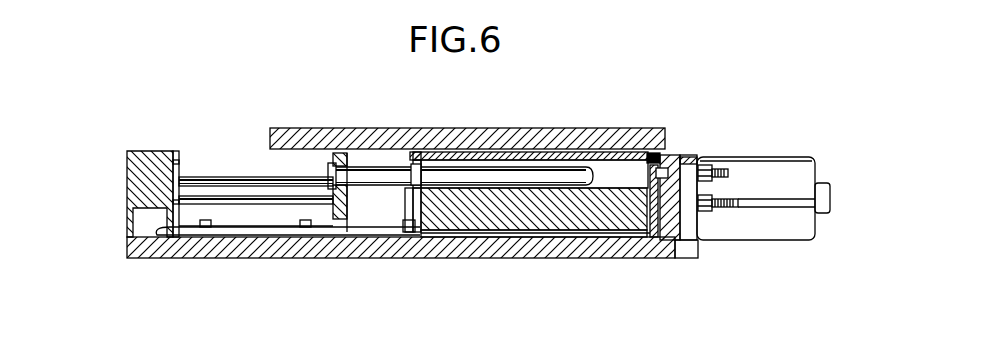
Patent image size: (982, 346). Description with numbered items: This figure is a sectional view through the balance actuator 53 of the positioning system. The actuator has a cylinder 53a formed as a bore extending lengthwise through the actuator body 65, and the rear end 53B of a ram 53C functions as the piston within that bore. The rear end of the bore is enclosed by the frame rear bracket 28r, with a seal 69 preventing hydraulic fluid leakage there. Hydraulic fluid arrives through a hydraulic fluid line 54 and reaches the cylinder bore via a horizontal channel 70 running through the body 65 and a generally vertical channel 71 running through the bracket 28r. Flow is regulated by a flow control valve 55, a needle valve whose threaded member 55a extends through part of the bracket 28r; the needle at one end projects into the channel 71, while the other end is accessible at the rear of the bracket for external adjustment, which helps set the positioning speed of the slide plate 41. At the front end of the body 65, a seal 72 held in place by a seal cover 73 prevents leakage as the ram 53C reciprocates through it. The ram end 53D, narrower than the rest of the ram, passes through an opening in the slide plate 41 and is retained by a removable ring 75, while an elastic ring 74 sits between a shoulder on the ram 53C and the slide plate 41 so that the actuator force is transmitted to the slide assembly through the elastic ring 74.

The frame rear bracket 28r is at (670, 240).
The slide plate 41 is at (349, 210).
The balance actuator 53 is at (515, 192).
The cylinder 53a is at (619, 177).
The rear end of ram 53B is at (585, 183).
The ram 53C is at (473, 175).
The ram end 53D is at (328, 165).
The hydraulic fluid line 54 is at (338, 236).
The flow control valve 55 is at (706, 156).
The threaded member 55a is at (676, 156).
The actuator body 65 is at (580, 222).
The seal 69 is at (661, 153).
The horizontal channel 70 is at (456, 232).
The vertical channel 71 is at (697, 250).
The seal 72 is at (433, 150).
The seal cover 73 is at (404, 151).
The elastic ring 74 is at (349, 151).
The removable ring 75 is at (329, 200).